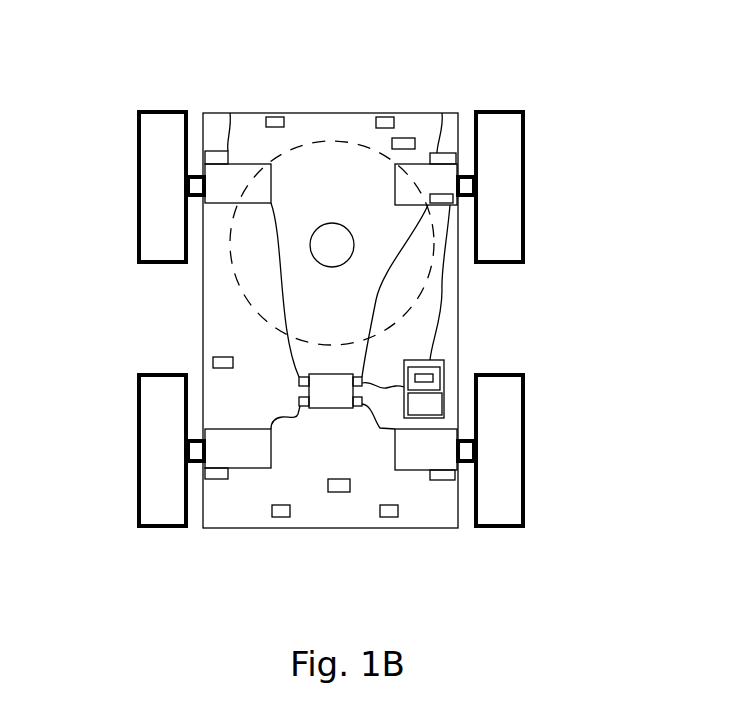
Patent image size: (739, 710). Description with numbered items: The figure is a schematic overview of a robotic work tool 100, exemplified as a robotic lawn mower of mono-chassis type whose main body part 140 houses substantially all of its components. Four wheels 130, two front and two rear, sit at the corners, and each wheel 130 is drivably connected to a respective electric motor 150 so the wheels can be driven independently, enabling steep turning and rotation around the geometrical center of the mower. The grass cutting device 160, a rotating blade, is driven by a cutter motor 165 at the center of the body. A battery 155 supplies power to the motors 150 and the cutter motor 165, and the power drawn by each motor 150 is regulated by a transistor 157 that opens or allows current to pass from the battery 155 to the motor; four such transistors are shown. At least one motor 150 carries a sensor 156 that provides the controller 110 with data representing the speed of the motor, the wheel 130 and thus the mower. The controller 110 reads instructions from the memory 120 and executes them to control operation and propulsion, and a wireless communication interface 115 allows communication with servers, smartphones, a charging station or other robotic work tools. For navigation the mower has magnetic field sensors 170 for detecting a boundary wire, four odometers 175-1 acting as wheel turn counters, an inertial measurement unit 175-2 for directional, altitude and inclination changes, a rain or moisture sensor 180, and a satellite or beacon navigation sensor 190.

The robotic work tool 100 is at (193, 108).
The controller 110 is at (486, 351).
The wireless communication interface 115 is at (433, 378).
The memory 120 is at (442, 395).
The wheels 130 is at (160, 110).
The main body part 140 is at (225, 530).
The electric motor 150 is at (331, 315).
The battery 155 is at (330, 391).
The sensor 156 is at (456, 198).
The transistor 157 is at (299, 384).
The grass cutting device 160 is at (252, 312).
The cutter motor 165 is at (318, 259).
The magnetic field sensor 170 is at (378, 117).
The odometers 175-1 is at (230, 113).
The inertial measurement unit 175-2 is at (338, 492).
The moisture sensor 180 is at (411, 138).
The satellite navigation sensor 190 is at (213, 363).